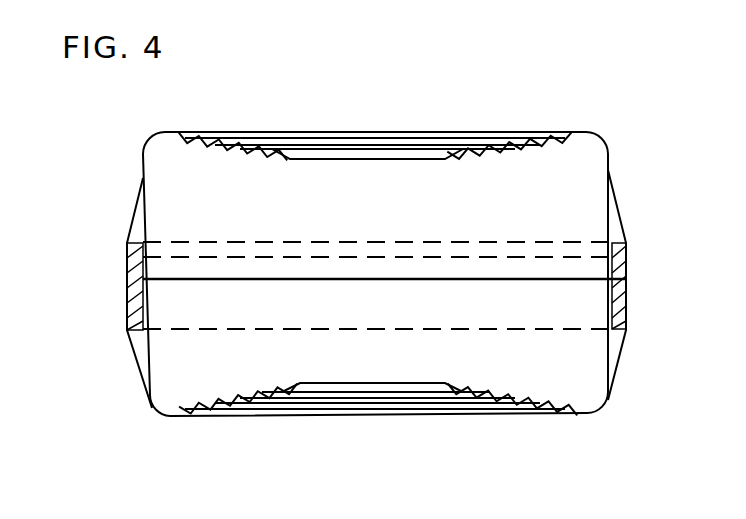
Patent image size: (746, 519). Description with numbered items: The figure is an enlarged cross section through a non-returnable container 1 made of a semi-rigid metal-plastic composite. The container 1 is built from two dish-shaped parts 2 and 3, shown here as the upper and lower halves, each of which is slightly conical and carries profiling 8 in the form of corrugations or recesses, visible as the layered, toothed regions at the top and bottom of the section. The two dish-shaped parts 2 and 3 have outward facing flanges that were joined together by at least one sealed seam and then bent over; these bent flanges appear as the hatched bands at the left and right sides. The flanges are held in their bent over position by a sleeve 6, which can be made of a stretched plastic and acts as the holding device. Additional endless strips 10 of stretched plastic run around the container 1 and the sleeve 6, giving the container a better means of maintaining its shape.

The non-returnable container 1 is at (344, 130).
The dish-shaped part 2 is at (377, 365).
The dish-shaped part 3 is at (484, 200).
The sleeve 6 is at (627, 316).
The profiling 8 is at (247, 145).
The endless strips 10 is at (133, 203).